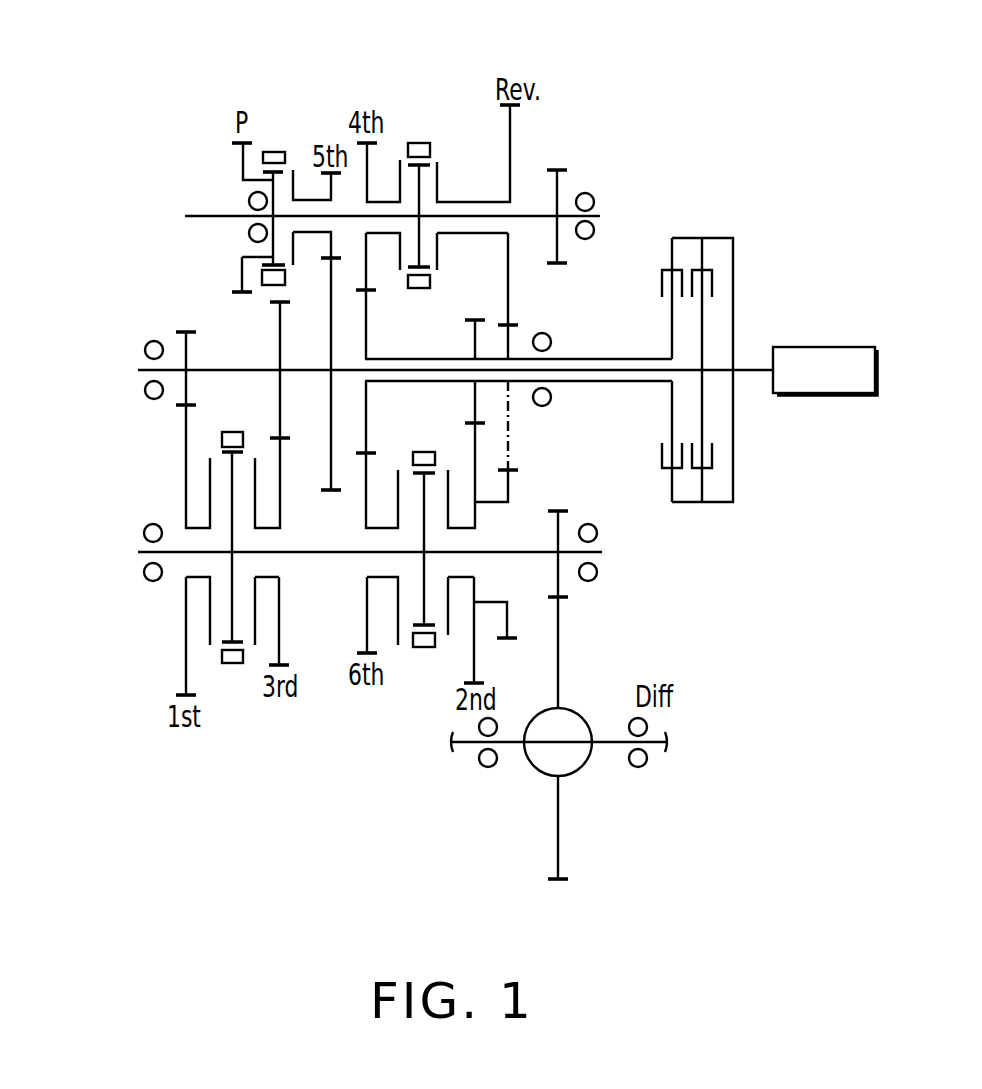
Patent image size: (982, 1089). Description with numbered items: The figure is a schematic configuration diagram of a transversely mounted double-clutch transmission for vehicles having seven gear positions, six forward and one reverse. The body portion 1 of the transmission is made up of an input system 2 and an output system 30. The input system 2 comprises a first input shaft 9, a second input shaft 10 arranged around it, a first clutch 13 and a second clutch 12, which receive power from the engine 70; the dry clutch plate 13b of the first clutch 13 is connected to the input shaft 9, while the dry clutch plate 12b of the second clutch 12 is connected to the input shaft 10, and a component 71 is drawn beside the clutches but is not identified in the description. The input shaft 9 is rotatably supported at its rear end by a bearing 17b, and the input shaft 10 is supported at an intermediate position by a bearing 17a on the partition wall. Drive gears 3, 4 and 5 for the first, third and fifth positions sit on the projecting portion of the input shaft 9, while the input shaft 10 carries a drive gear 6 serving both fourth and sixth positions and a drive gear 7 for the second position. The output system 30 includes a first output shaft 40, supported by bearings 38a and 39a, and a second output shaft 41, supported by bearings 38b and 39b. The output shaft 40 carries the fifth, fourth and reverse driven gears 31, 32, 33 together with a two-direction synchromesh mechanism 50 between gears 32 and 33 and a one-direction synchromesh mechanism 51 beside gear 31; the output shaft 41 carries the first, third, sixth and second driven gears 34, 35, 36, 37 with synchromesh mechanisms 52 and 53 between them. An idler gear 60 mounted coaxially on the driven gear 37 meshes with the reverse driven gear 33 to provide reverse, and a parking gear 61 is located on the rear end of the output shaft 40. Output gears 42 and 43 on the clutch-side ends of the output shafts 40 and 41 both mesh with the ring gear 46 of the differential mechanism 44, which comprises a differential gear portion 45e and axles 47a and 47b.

The body portion 1 is at (103, 160).
The input system 2 is at (696, 327).
The drive gear 3 is at (183, 393).
The drive gear 4 is at (278, 386).
The drive gear 5 is at (328, 452).
The drive gear 6 is at (368, 322).
The drive gear 7 is at (474, 343).
The first input shaft 9 is at (253, 369).
The second input shaft 10 is at (447, 358).
The second clutch 12 is at (658, 268).
The dry clutch plate 12b is at (671, 327).
The first clutch 13 is at (718, 258).
The dry clutch plate 13b is at (703, 338).
The bearing 17a is at (548, 331).
The bearing 17b is at (146, 347).
The output system 30 is at (217, 80).
The fifth driven gear 31 is at (327, 239).
The fourth driven gear 32 is at (370, 172).
The reverse driven gear 33 is at (510, 133).
The first driven gear 34 is at (185, 653).
The third driven gear 35 is at (281, 601).
The sixth driven gear 36 is at (365, 622).
The second driven gear 37 is at (476, 655).
The bearing 38a is at (596, 201).
The bearing 38b is at (591, 582).
The bearing 39a is at (248, 202).
The bearing 39b is at (155, 582).
The first output shaft 40 is at (542, 213).
The second output shaft 41 is at (545, 551).
The output gear 42 is at (559, 183).
The output gear 43 is at (562, 518).
The differential mechanism 44 is at (535, 777).
The differential gear portion 45e is at (575, 770).
The ring gear 46 is at (562, 862).
The axle 47a is at (452, 752).
The axle 47b is at (657, 752).
The synchromesh mechanism 50 is at (420, 128).
The synchromesh mechanism 51 is at (273, 128).
The synchromesh mechanism 52 is at (232, 675).
The synchromesh mechanism 53 is at (420, 670).
The idler gear 60 is at (510, 490).
The parking gear 61 is at (236, 148).
The engine 70 is at (848, 347).
The clutch housing 71 is at (734, 290).